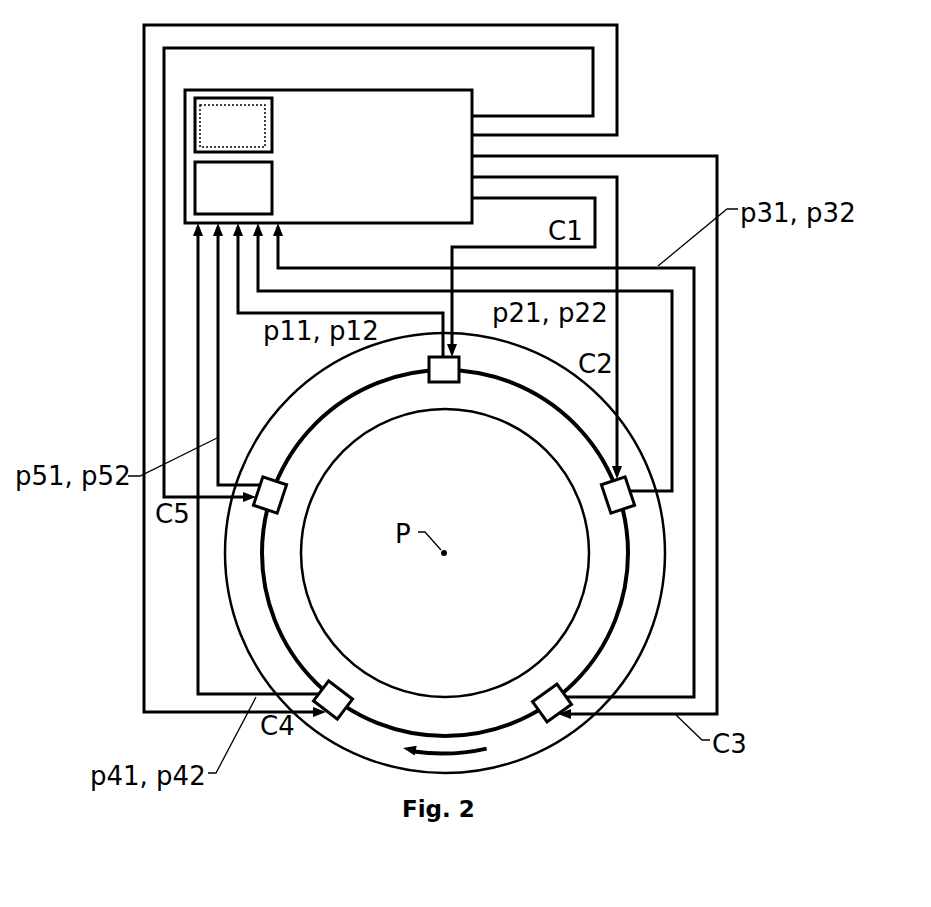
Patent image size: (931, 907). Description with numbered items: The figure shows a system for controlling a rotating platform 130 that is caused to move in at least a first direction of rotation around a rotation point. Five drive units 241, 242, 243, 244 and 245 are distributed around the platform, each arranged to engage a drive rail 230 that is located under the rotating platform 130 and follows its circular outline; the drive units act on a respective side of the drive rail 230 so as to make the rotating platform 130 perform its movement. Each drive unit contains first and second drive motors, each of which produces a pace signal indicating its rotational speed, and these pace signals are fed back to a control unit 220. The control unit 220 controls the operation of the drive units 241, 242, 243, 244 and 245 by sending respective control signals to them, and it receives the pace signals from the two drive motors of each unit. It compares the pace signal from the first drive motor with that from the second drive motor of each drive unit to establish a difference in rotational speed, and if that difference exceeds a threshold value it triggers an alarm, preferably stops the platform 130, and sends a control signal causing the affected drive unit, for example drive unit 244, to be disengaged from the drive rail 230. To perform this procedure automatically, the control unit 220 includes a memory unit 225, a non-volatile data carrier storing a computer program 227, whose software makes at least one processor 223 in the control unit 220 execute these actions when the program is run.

The control unit 220 is at (260, 90).
The processor 223 is at (273, 186).
The memory unit 225 is at (273, 125).
The computer program 227 is at (232, 126).
The rotating platform 130 is at (317, 397).
The drive rail 230 is at (624, 587).
The drive unit 241 is at (481, 420).
The drive unit 242 is at (571, 507).
The drive unit 243 is at (510, 679).
The drive unit 244 is at (385, 660).
The drive unit 245 is at (337, 495).